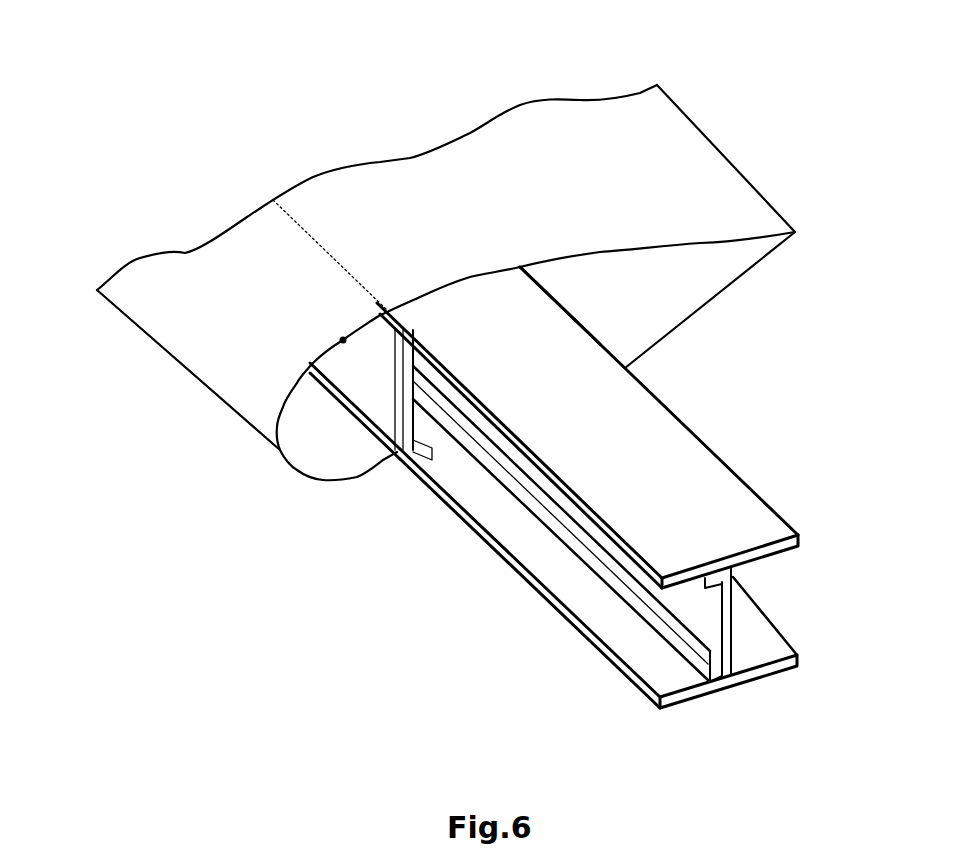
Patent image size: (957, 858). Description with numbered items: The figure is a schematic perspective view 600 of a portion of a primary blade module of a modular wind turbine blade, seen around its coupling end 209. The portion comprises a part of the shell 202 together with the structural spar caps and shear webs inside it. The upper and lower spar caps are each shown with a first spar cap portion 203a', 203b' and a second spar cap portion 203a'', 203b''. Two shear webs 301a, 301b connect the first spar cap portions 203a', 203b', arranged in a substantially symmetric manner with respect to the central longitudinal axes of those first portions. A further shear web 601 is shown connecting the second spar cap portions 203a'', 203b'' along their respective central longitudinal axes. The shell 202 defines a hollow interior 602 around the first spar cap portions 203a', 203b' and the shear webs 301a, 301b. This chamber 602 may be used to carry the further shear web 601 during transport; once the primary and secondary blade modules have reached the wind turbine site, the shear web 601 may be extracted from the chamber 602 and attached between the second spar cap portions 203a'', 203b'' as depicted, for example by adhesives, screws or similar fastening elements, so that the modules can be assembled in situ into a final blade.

The perspective view 600 is at (138, 152).
The hollow interior 602 is at (652, 278).
The shell 202 is at (240, 362).
The coupling end 209 is at (343, 340).
The first spar cap portion 203a' is at (414, 168).
The second spar cap portion 203a'' is at (602, 427).
The first spar cap portion 203b' is at (302, 500).
The second spar cap portion 203b'' is at (598, 537).
The shear web 301a is at (405, 400).
The shear web 301b is at (552, 285).
The further shear web 601 is at (728, 590).